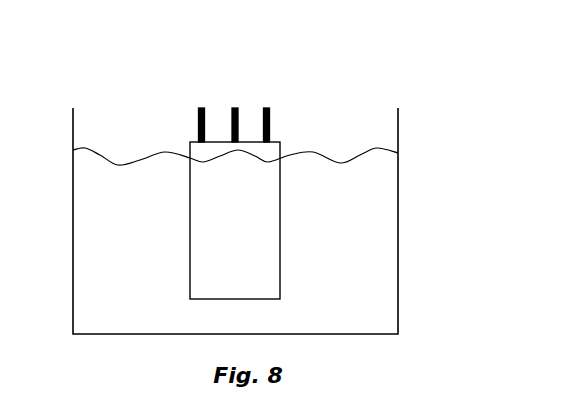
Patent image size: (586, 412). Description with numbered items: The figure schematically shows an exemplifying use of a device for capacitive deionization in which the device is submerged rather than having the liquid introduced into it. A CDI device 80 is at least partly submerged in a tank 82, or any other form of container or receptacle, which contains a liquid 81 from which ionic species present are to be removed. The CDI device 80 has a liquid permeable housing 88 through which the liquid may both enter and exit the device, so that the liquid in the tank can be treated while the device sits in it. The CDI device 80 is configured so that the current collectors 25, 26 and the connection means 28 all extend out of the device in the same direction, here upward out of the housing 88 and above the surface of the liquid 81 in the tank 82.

The tank 82 is at (73, 131).
The liquid 81 is at (132, 240).
The liquid permeable housing 88 is at (222, 248).
The CDI device 80 is at (303, 135).
The current collector 25 is at (195, 130).
The connection means 28 is at (232, 108).
The current collector 26 is at (272, 107).